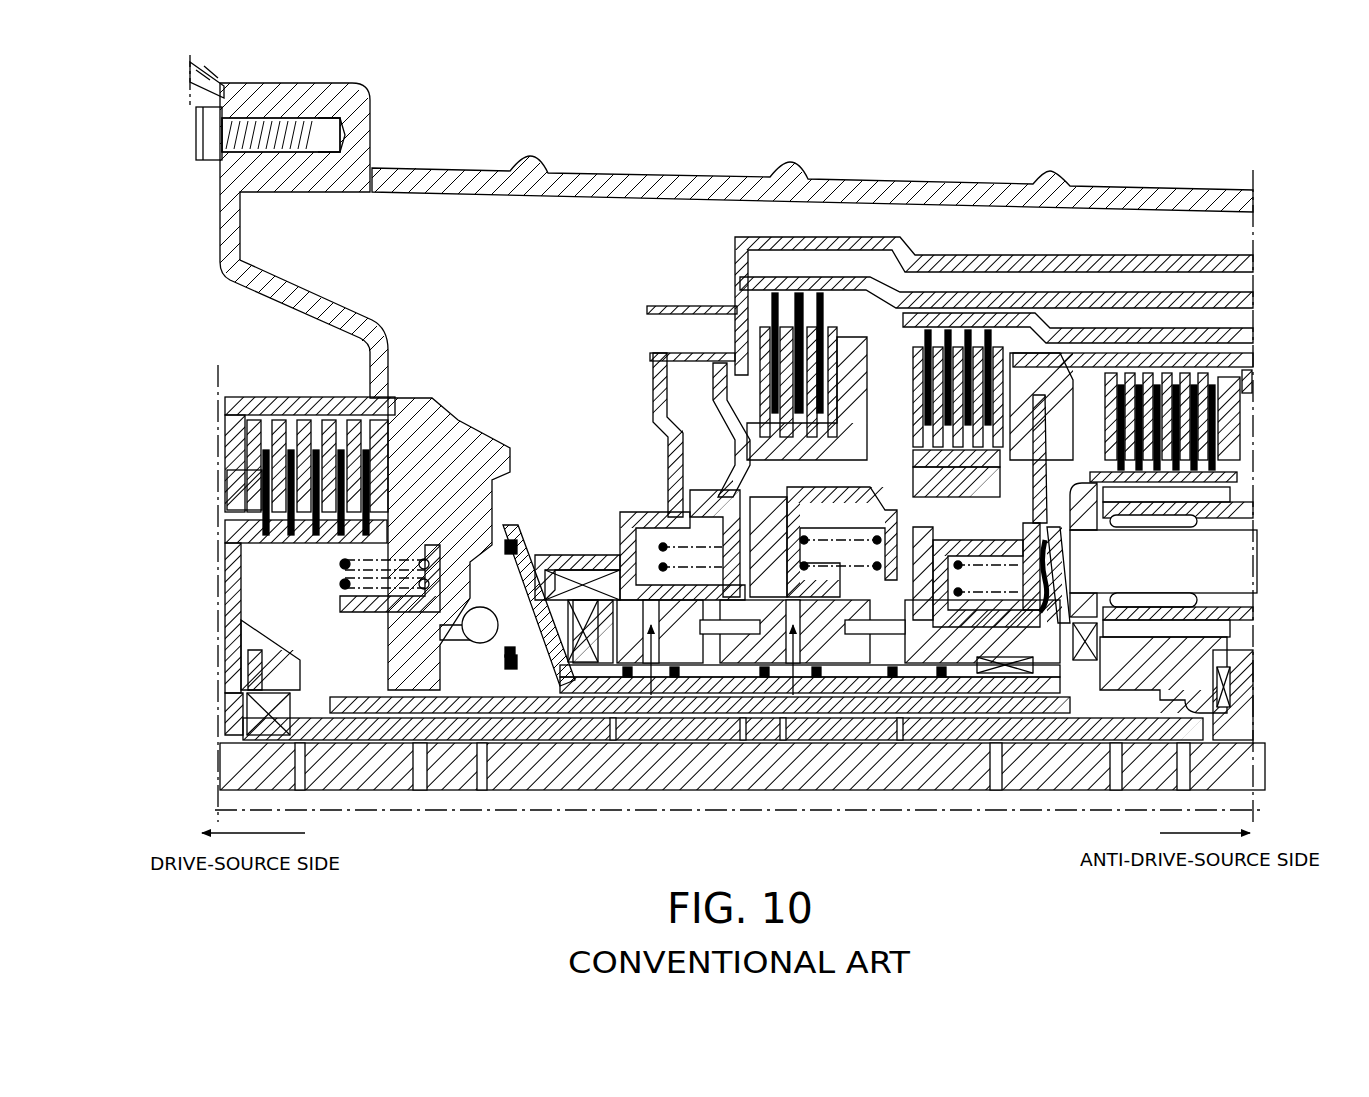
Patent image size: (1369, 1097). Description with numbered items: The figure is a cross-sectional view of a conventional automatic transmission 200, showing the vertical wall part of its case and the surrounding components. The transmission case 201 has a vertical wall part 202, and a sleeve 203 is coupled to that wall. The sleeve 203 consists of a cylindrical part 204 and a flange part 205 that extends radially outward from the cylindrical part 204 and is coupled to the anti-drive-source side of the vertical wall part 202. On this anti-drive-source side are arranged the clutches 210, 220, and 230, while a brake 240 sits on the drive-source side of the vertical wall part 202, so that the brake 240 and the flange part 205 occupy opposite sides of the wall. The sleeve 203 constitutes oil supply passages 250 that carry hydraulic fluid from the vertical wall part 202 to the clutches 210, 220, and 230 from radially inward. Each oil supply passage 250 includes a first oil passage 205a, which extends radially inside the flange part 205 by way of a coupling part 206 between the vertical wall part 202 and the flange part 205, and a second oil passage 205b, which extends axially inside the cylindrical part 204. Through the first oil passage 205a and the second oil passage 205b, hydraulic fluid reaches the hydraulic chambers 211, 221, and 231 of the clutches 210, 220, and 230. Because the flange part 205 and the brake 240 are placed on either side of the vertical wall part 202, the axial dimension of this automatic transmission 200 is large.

The automatic transmission 200 is at (953, 177).
The transmission case 201 is at (877, 183).
The vertical wall part 202 is at (418, 418).
The sleeve 203 is at (688, 700).
The cylindrical part 204 is at (745, 700).
The flange part 205 is at (545, 560).
The first oil passage 205a is at (538, 695).
The second oil passage 205b is at (603, 700).
The coupling part 206 is at (490, 640).
The clutch 210 is at (1213, 368).
The hydraulic chamber 211 is at (1048, 578).
The clutch 220 is at (975, 322).
The hydraulic chamber 221 is at (775, 535).
The clutch 230 is at (847, 320).
The hydraulic chamber 231 is at (598, 580).
The brake 240 is at (330, 412).
The oil supply passage 250 is at (505, 655).